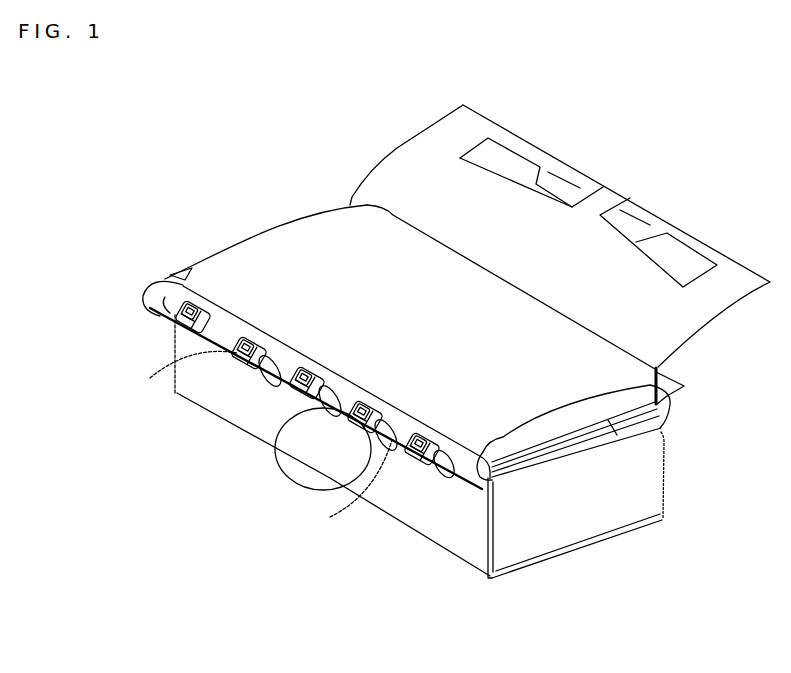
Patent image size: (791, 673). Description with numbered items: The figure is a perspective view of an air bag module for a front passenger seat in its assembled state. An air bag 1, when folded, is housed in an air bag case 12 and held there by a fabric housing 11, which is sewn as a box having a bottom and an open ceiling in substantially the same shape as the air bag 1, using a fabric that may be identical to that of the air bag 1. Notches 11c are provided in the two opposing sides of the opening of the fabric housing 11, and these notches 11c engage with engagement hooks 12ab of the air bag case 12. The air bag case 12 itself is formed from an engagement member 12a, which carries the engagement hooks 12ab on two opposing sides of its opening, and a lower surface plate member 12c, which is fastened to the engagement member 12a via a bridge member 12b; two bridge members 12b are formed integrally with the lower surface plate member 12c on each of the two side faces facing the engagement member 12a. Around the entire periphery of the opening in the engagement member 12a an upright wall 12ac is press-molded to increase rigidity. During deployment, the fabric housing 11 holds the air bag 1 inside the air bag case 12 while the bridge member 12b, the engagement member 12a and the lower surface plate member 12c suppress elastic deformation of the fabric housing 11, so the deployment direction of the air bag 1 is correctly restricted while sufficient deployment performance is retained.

The air bag 1 is at (262, 258).
The fabric housing 11 is at (530, 540).
The notches 11c is at (168, 308).
The air bag case 12 is at (453, 577).
The engagement member 12a is at (664, 436).
The engagement hooks 12ab is at (185, 355).
The upright wall 12ac is at (567, 457).
The bridge member 12b is at (207, 385).
The lower surface plate member 12c is at (605, 542).